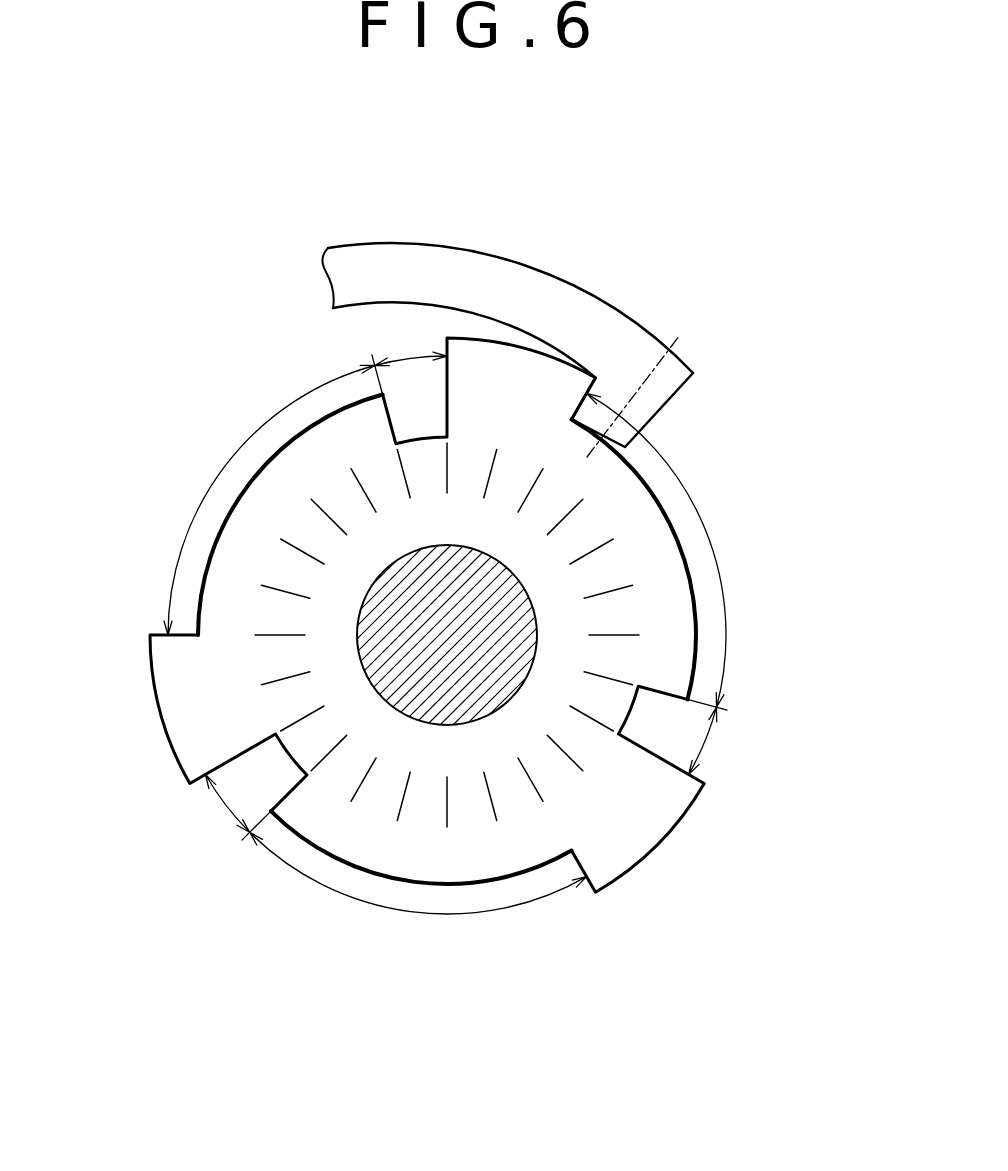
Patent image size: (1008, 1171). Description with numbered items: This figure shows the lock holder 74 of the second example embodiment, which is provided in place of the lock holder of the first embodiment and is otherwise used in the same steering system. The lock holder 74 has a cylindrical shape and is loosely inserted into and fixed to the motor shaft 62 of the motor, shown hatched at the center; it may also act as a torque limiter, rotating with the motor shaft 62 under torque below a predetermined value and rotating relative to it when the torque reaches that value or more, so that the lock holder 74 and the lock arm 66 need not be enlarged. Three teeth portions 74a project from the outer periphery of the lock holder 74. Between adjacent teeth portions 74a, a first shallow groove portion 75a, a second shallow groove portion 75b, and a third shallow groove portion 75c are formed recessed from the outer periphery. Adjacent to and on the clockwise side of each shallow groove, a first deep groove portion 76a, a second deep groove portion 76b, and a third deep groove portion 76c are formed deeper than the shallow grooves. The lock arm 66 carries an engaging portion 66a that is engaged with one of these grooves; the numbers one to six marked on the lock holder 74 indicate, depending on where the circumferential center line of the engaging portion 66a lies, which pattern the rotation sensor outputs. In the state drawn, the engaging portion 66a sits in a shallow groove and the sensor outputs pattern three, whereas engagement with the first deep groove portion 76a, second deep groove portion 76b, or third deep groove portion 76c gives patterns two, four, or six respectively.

The motor shaft 62 is at (512, 703).
The lock arm 66 is at (578, 287).
The engaging portion 66a is at (658, 410).
The lock holder 74 is at (697, 590).
The teeth portions 74a is at (495, 340).
The first shallow groove portion 75a is at (678, 550).
The second shallow groove portion 75b is at (418, 893).
The third shallow groove portion 75c is at (269, 500).
The first deep groove portion 76a is at (730, 740).
The second deep groove portion 76b is at (210, 808).
The third deep groove portion 76c is at (411, 345).